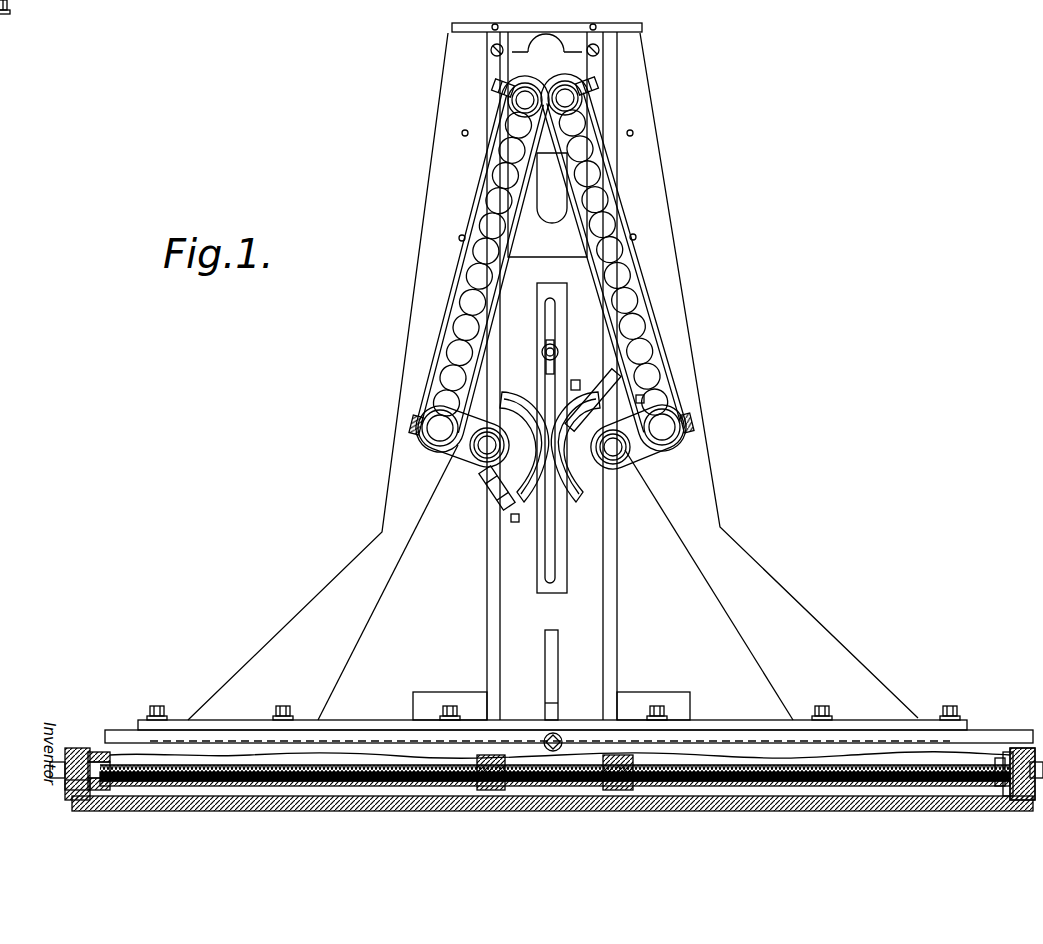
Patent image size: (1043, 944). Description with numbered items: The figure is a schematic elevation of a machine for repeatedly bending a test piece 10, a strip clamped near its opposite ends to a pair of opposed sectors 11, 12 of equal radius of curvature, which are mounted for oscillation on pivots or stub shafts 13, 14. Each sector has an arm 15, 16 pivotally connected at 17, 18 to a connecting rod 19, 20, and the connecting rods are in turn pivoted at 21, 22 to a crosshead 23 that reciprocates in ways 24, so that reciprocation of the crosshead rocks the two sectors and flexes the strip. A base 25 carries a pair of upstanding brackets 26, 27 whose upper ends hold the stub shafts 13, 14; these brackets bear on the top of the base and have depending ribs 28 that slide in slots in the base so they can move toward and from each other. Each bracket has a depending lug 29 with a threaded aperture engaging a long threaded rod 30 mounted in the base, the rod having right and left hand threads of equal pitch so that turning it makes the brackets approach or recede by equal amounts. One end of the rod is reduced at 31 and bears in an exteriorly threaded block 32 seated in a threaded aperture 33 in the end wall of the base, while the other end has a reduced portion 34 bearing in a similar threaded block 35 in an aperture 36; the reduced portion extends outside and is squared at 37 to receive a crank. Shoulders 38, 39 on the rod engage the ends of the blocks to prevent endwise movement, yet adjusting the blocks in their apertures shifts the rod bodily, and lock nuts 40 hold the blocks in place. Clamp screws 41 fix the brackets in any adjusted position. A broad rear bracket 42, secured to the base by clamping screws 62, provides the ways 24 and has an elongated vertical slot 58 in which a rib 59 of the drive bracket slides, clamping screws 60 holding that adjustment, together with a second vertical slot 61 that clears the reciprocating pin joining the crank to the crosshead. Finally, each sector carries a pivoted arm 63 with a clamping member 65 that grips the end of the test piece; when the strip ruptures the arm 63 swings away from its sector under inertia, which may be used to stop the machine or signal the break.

The test piece 10 is at (608, 384).
The sector 11 is at (500, 462).
The sector 12 is at (590, 458).
The pivot or stub shaft 13 is at (498, 410).
The pivot or stub shaft 14 is at (615, 458).
The arm 15 is at (450, 460).
The arm 16 is at (655, 455).
The pivotal connection 17 is at (437, 423).
The pivotal connection 18 is at (672, 430).
The connecting rod 19 is at (460, 278).
The connecting rod 20 is at (640, 287).
The pivotal connection 21 is at (505, 105).
The pivotal connection 22 is at (567, 90).
The crosshead 23 is at (545, 87).
The ways 24 is at (605, 110).
The base 25 is at (895, 742).
The upstanding bracket 26 is at (392, 614).
The upstanding bracket 27 is at (720, 613).
The depending ribs 28 is at (372, 738).
The depending lug 29 is at (615, 757).
The threaded rod 30 is at (238, 765).
The reduced diameter end 31 is at (1008, 755).
The exteriorly threaded block 32 is at (557, 755).
The interiorly threaded aperture 33 is at (1032, 762).
The portion of reduced cross section 34 is at (80, 782).
The exteriorly threaded block 35 is at (100, 765).
The interiorly threaded aperture 36 is at (95, 755).
The squared portion 37 is at (57, 762).
The shoulder 38 is at (1000, 760).
The shoulder 39 is at (102, 780).
The lock nuts 40 is at (75, 755).
The clamp screws 41 is at (284, 707).
The rear bracket 42 is at (655, 185).
The elongated vertical slot 58 is at (553, 320).
The projection or rib 59 is at (548, 368).
The clamping screws 60 is at (558, 352).
The elongated vertical slot 61 is at (545, 215).
The clamping screws 62 is at (158, 707).
The arm 63 is at (500, 505).
The clamping member 65 is at (514, 512).